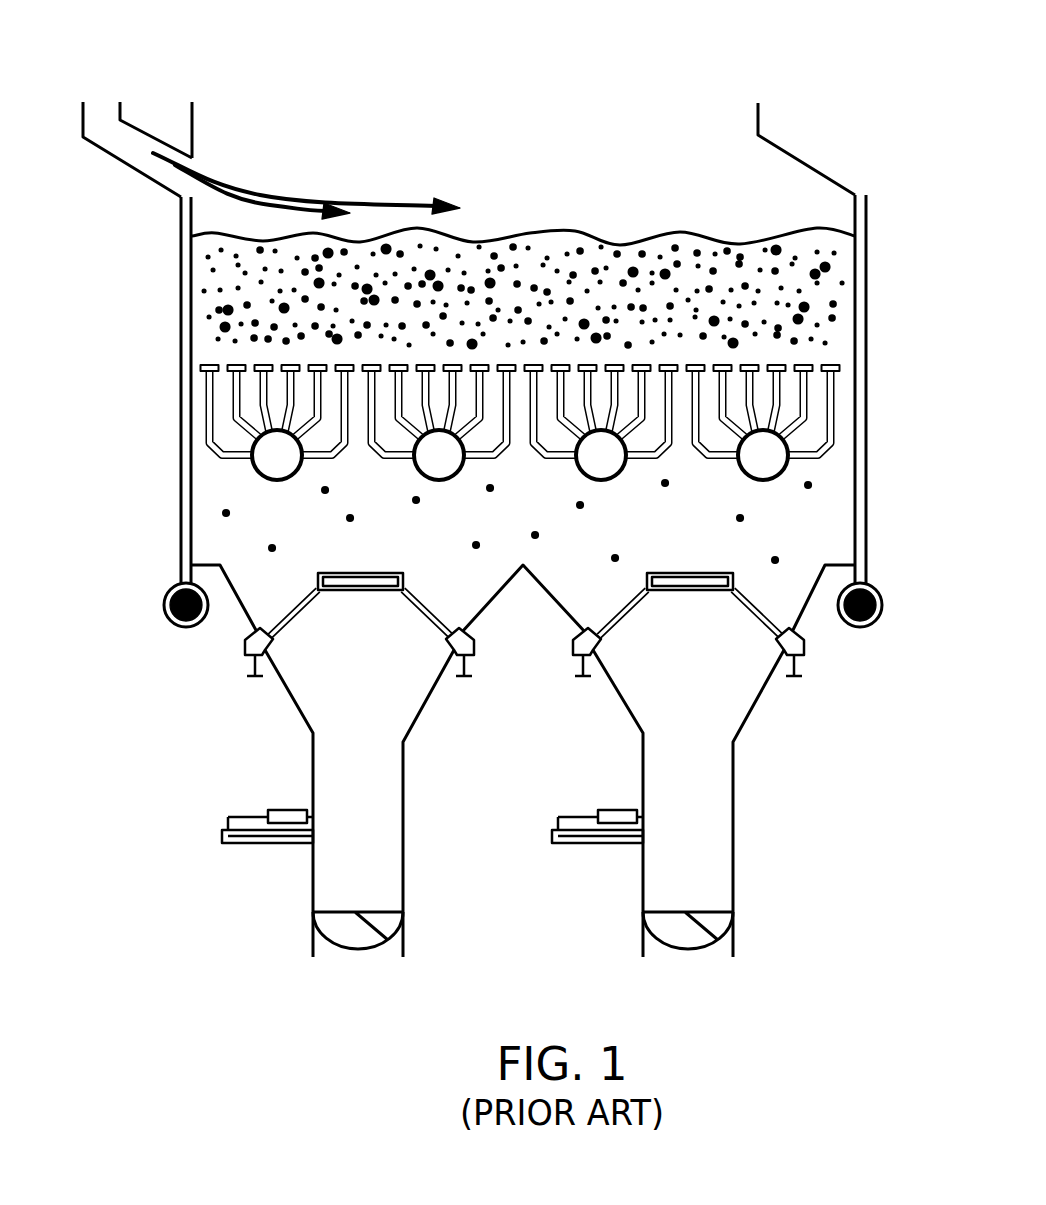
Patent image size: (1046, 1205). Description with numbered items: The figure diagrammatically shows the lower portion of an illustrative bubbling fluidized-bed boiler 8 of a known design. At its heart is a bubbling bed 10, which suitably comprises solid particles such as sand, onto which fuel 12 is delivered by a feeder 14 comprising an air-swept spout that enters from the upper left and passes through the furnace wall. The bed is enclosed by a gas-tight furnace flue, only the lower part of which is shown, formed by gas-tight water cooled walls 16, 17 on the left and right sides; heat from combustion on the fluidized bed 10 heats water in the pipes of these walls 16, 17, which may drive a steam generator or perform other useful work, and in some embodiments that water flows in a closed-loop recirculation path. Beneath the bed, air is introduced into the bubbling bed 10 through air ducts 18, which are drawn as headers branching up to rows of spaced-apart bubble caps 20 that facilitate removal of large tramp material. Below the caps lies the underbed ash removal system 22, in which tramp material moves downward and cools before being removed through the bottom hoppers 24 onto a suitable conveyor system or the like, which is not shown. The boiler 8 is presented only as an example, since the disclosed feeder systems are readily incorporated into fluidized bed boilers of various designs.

The bubbling fluidized-bed boiler 8 is at (232, 717).
The bubbling bed 10 is at (518, 240).
The fuel 12 is at (240, 200).
The feeder 14 is at (142, 127).
The gas-tight water cooled wall 16 is at (188, 463).
The gas-tight water cooled wall 17 is at (866, 480).
The air ducts 18 is at (440, 458).
The bubble caps 20 is at (233, 393).
The underbed ash removal system 22 is at (694, 625).
The bottom hoppers 24 is at (403, 828).